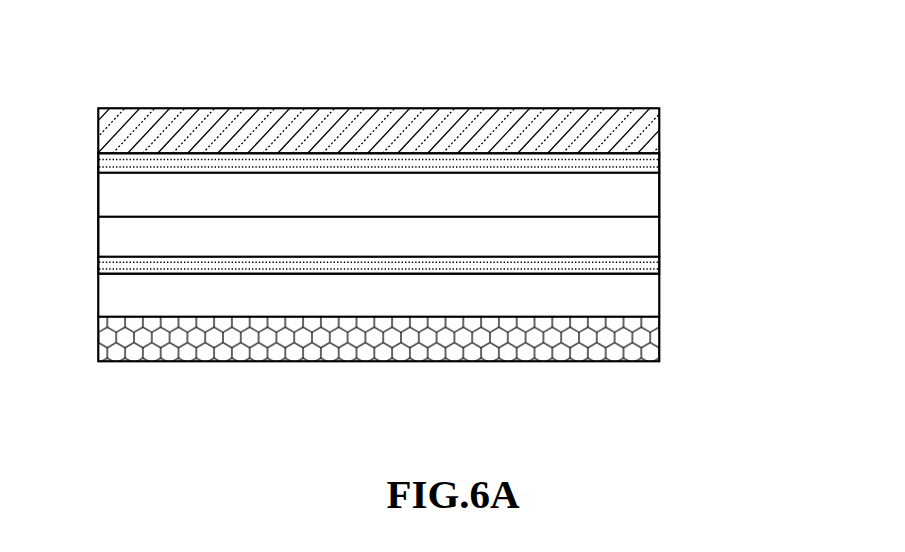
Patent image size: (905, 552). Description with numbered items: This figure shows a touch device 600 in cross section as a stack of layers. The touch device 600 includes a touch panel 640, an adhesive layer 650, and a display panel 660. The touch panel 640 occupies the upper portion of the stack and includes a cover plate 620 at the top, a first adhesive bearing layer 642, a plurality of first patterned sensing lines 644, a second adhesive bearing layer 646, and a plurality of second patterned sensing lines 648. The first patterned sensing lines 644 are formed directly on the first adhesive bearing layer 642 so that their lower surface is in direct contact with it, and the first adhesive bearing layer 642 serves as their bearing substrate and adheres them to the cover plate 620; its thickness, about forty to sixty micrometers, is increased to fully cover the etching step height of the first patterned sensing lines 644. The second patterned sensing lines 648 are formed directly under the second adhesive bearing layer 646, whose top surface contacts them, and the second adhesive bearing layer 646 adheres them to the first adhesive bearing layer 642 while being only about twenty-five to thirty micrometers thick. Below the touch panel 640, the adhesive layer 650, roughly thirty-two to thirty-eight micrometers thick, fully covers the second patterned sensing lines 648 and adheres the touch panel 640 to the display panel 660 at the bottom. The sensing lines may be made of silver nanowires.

The touch device 600 is at (73, 64).
The cover plate 620 is at (659, 113).
The touch panel 640 is at (487, 183).
The first patterned sensing lines 644 is at (659, 157).
The first adhesive bearing layer 642 is at (638, 197).
The second adhesive bearing layer 646 is at (640, 232).
The second patterned sensing lines 648 is at (445, 257).
The adhesive layer 650 is at (638, 308).
The display panel 660 is at (643, 347).